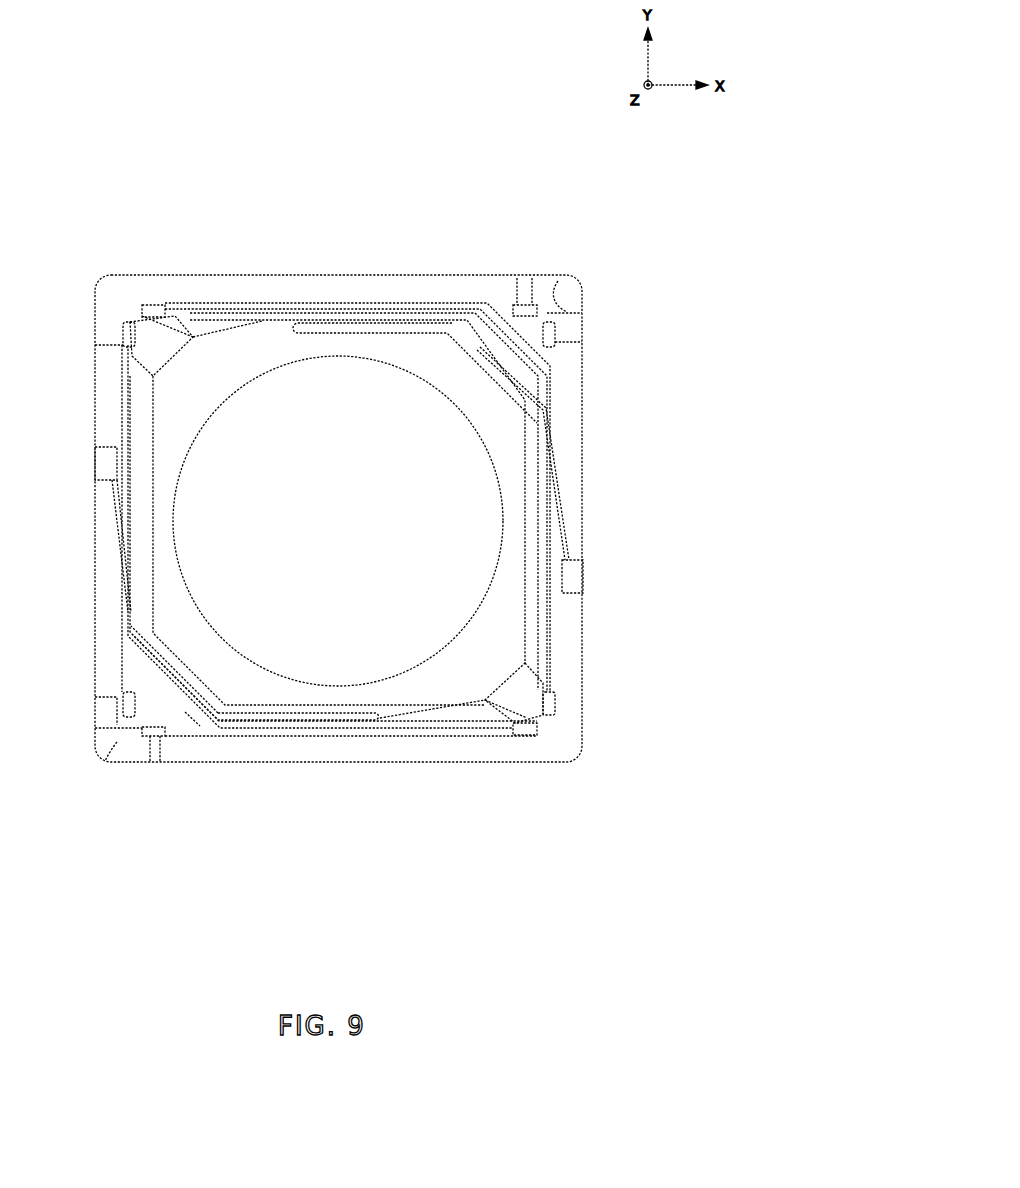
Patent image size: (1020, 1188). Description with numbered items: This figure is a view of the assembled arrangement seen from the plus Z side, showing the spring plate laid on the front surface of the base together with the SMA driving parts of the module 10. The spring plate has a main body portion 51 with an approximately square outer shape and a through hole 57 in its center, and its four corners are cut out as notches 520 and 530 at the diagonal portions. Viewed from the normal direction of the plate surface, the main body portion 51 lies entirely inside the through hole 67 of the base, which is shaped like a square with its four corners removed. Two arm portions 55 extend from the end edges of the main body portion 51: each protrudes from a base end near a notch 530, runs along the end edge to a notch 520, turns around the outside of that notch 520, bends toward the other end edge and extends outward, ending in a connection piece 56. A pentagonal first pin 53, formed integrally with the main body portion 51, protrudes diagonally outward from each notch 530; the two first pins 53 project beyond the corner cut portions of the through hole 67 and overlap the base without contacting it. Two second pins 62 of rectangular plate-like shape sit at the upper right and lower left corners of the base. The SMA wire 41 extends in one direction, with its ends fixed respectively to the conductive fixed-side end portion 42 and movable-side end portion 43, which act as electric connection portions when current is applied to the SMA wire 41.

The camera module 10 is at (78, 213).
The SMA wire 41 is at (297, 312).
The fixed-side end portion 42 is at (525, 304).
The movable-side end portion 43 is at (149, 304).
The main body portion 51 is at (355, 343).
The first pin 53 is at (118, 292).
The arm portion 55 is at (425, 330).
The connection piece 56 is at (103, 463).
The through hole 57 is at (283, 380).
The second pin 62 is at (560, 282).
The through hole 67 is at (192, 717).
The notch 520 is at (205, 728).
The notch 530 is at (190, 333).